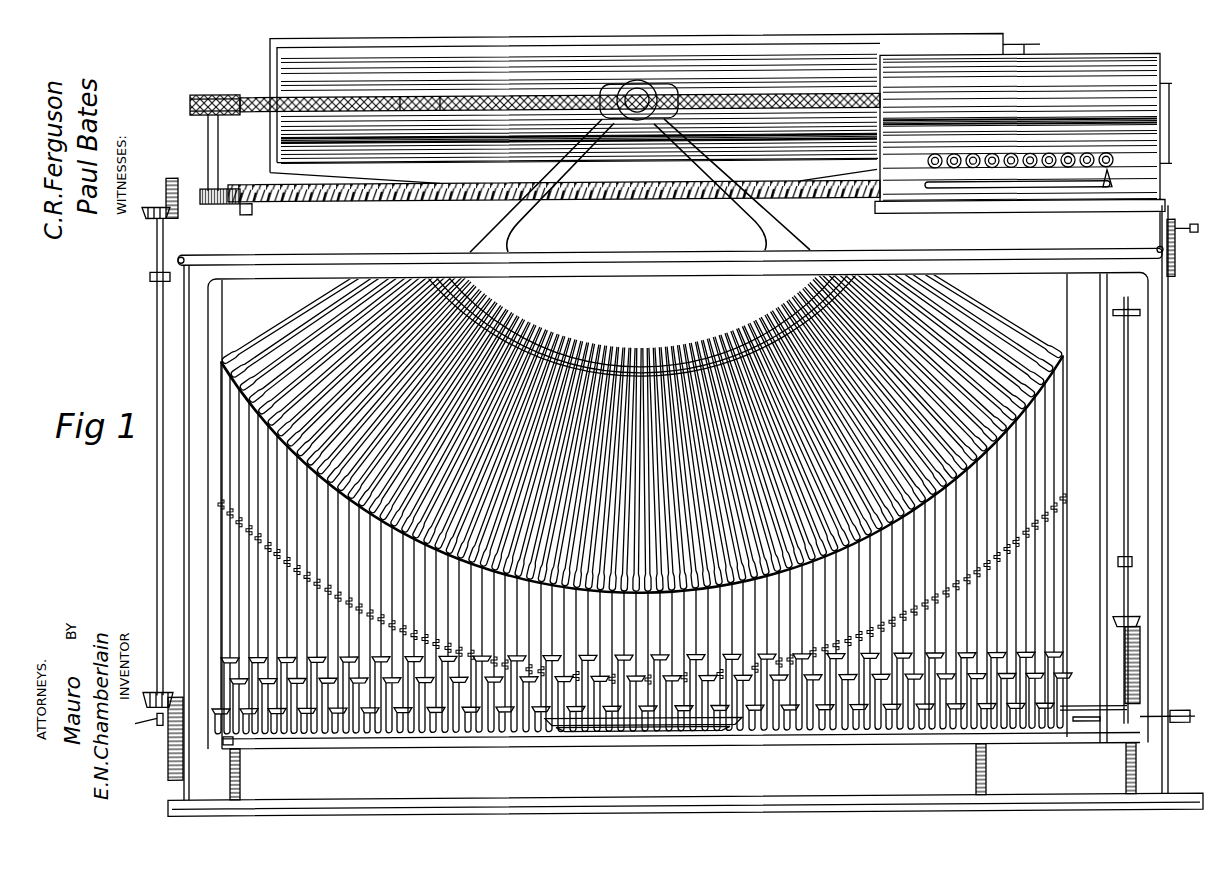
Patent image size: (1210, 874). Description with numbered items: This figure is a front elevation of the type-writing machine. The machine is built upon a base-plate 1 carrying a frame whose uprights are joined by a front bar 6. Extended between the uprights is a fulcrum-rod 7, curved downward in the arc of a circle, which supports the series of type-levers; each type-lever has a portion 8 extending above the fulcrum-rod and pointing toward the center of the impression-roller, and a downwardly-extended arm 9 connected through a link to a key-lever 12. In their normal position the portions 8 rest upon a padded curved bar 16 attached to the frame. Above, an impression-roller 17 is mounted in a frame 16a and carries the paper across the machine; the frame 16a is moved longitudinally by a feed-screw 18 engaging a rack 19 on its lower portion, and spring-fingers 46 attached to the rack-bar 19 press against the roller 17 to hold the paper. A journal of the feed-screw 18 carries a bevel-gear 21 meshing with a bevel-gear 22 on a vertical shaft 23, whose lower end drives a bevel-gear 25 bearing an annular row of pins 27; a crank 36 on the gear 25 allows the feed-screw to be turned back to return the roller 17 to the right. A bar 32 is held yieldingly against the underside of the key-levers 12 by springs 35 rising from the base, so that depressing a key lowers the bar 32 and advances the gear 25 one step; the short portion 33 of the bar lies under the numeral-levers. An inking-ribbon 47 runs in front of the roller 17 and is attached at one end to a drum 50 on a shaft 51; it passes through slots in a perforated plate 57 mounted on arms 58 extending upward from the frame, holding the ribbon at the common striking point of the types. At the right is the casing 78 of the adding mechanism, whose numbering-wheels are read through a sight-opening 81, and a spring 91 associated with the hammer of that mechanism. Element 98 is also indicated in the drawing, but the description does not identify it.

The base-plate 1 is at (722, 800).
The front bar 6 is at (330, 254).
The fulcrum-rod 7 is at (1067, 348).
The type-lever portion 8 is at (308, 338).
The downwardly-extended arm 9 is at (232, 480).
The key-lever 12 is at (240, 616).
The curved bar 16 is at (908, 290).
The frame 16a is at (330, 46).
The impression-roller 17 is at (540, 90).
The feed-screw 18 is at (272, 203).
The rack 19 is at (492, 183).
The bevel-gear 21 is at (167, 187).
The bevel-gear 22 is at (148, 222).
The vertical shaft 23 is at (158, 385).
The bevel-gear 25 is at (170, 760).
The pins 27 is at (172, 780).
The bar 32 is at (628, 740).
The short portion of the bar 33 is at (1025, 740).
The springs 35 is at (1127, 773).
The crank 36 is at (150, 728).
The spring-fingers 46 is at (252, 182).
The inking-ribbon 47 is at (428, 92).
The drum 50 is at (238, 95).
The shaft 51 is at (208, 150).
The perforated plate 57 is at (645, 82).
The arms 58 is at (528, 223).
The casing 78 is at (1058, 58).
The sight-opening 81 is at (1104, 165).
The spring 91 is at (1114, 185).
The stop 98 is at (985, 730).